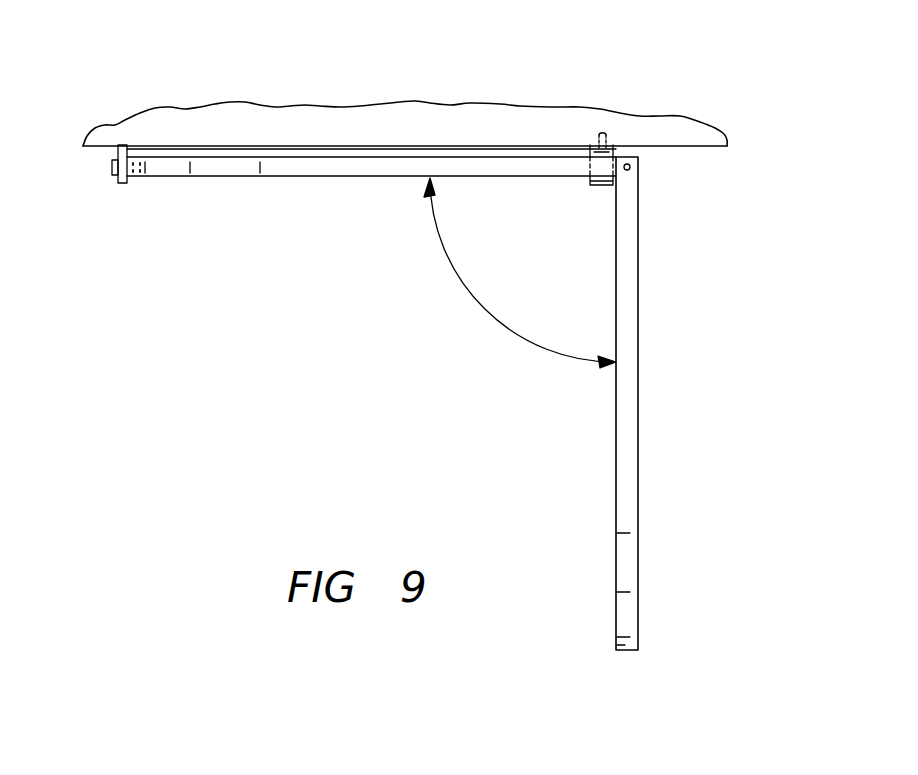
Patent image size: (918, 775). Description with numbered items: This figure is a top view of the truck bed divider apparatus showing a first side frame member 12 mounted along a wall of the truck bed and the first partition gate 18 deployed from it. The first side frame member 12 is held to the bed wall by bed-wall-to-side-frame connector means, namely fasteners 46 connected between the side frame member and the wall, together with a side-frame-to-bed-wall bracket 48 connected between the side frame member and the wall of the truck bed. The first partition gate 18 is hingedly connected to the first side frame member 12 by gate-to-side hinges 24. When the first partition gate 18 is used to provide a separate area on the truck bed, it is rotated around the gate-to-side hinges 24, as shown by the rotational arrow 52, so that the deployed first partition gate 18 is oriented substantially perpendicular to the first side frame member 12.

The first side frame member 12 is at (318, 157).
The fasteners 46 is at (118, 172).
The side-frame-to-bed-wall brackets 48 is at (597, 186).
The gate-to-side hinges 24 is at (638, 167).
The first partition gate 18 is at (630, 468).
The rotational arrow 52 is at (490, 309).